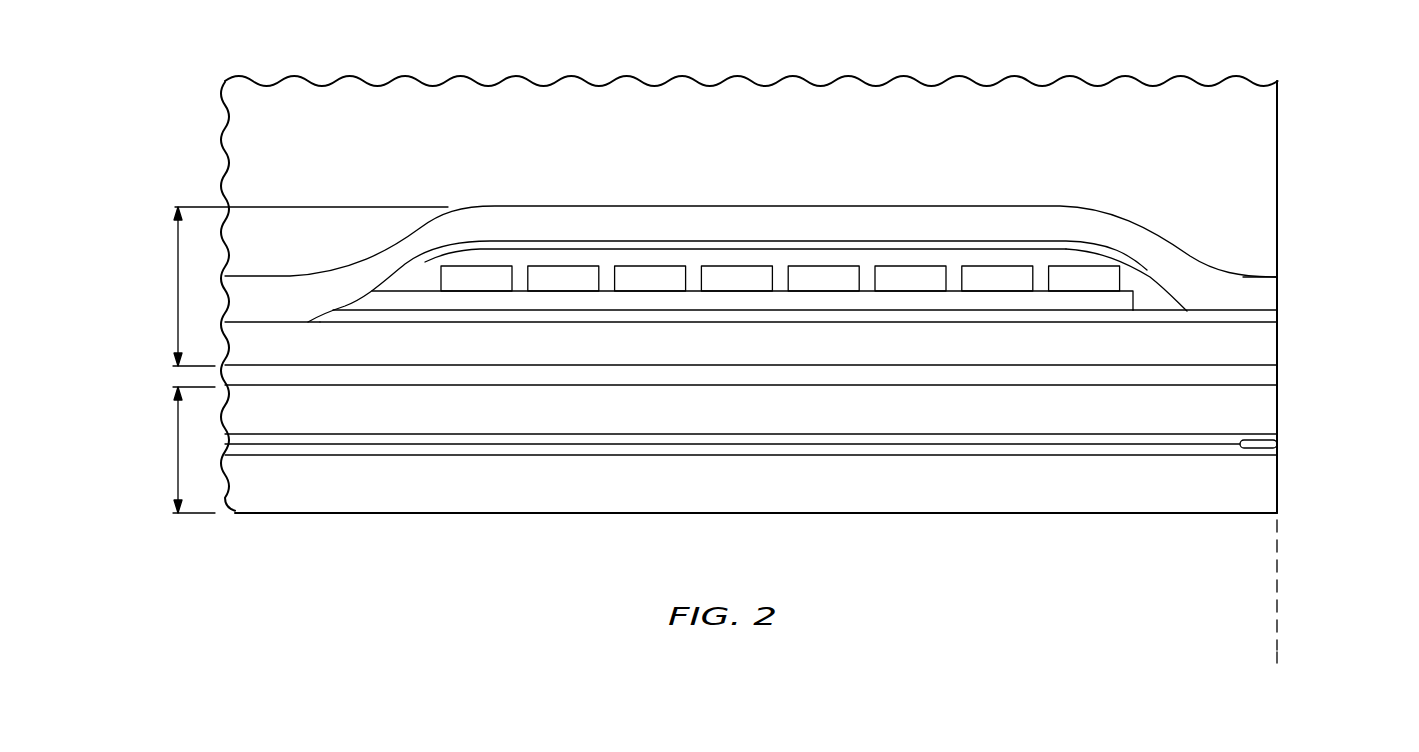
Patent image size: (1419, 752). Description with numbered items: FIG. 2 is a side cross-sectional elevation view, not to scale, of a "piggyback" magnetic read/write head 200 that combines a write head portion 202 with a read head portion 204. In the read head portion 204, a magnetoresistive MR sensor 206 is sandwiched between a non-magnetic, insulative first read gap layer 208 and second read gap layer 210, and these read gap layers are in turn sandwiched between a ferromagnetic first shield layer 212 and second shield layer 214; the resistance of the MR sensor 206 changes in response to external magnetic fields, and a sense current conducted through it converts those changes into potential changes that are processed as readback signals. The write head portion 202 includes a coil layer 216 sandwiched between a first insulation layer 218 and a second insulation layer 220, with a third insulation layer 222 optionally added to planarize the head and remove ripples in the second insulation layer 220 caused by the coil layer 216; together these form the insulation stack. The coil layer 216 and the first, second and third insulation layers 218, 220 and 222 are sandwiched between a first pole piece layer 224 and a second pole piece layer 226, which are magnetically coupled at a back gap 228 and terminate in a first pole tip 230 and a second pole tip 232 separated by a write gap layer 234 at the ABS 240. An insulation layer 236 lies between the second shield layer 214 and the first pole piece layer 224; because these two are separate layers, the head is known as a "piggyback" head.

The magnetic read/write head 200 is at (186, 105).
The write head portion 202 is at (178, 284).
The read head portion 204 is at (178, 454).
The MR sensor 206 is at (1278, 447).
The first read gap layer 208 is at (828, 458).
The second read gap layer 210 is at (805, 432).
The first shield layer 212 is at (1145, 505).
The second shield layer 214 is at (1165, 423).
The coil layer 216 is at (820, 273).
The first insulation layer 218 is at (601, 303).
The second insulation layer 220 is at (1138, 277).
The third insulation layer 222 is at (530, 248).
The first pole piece layer 224 is at (1164, 358).
The second pole piece layer 226 is at (968, 210).
The back gap 228 is at (261, 323).
The first pole tip 230 is at (1278, 347).
The second pole tip 232 is at (1278, 293).
The write gap layer 234 is at (1278, 316).
The insulation layer 236 is at (1003, 378).
The ABS 240 is at (1277, 657).